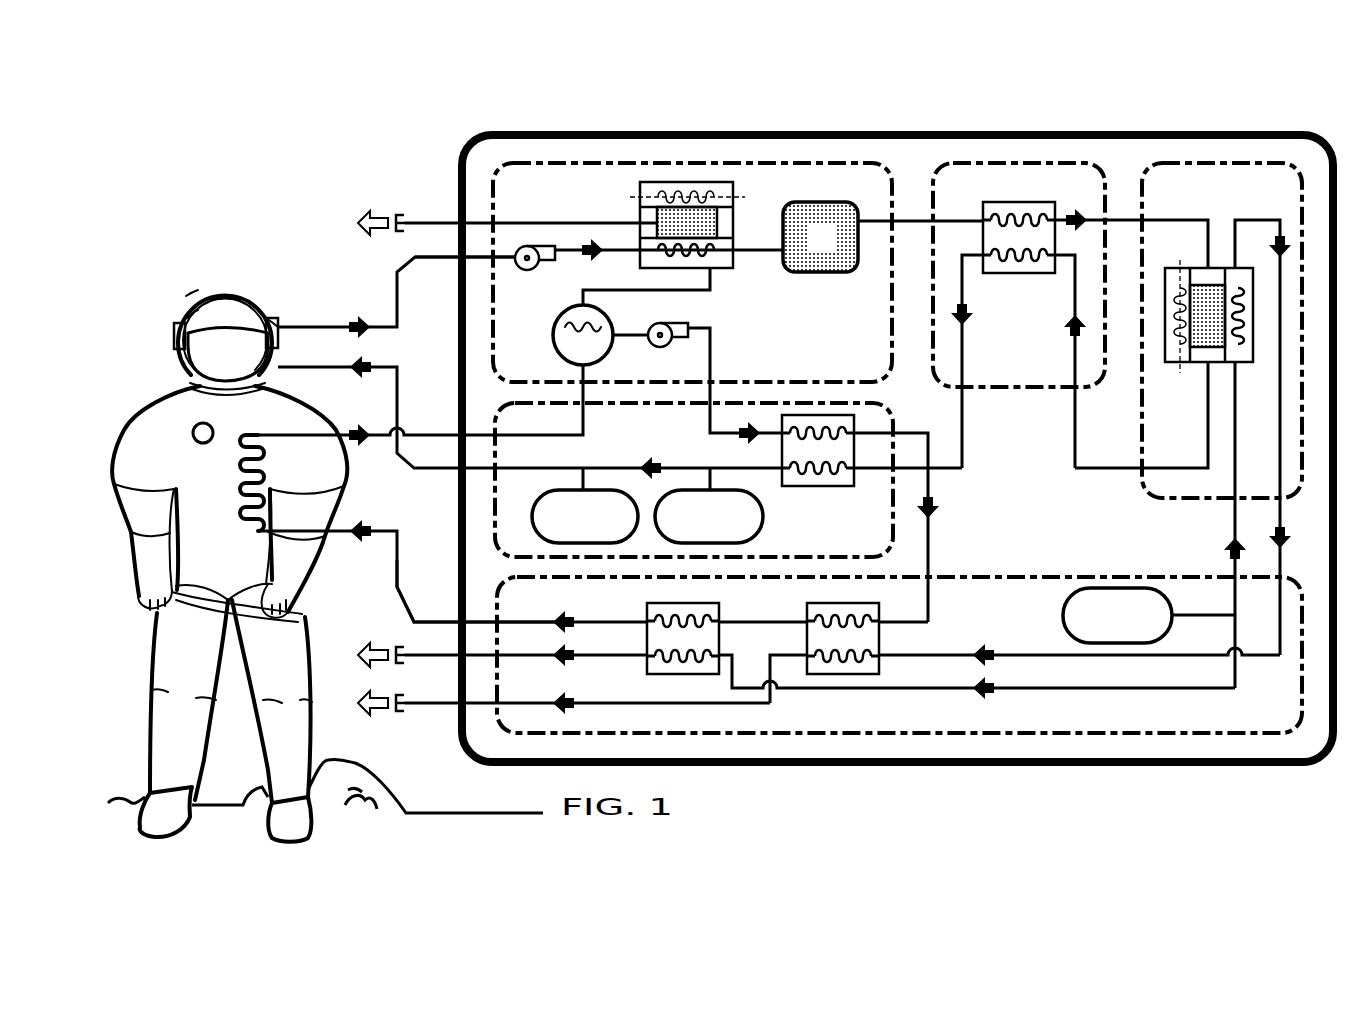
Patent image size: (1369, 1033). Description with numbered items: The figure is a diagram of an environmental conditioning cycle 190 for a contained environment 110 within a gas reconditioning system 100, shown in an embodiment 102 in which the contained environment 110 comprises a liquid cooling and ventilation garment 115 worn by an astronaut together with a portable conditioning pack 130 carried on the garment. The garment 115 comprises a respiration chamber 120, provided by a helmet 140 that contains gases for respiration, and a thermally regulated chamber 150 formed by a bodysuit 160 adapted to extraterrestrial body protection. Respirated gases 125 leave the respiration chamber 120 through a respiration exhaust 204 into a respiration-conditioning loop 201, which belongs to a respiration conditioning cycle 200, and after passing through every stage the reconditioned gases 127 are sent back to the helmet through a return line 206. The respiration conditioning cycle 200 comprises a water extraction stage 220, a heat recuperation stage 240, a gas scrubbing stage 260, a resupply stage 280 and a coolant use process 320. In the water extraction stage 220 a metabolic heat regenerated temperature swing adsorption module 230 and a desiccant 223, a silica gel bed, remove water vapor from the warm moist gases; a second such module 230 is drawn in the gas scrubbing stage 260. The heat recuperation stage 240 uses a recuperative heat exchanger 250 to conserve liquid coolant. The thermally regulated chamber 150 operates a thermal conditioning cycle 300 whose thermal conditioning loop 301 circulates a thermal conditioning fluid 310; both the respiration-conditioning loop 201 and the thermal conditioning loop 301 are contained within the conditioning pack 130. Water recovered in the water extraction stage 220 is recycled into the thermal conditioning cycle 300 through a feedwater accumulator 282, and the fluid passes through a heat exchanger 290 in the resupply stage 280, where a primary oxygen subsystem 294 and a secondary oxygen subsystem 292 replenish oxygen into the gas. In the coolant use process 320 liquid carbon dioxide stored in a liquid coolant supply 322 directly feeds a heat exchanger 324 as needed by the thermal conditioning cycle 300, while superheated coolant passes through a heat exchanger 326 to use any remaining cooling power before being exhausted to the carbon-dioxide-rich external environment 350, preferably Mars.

The gas reconditioning system 100 is at (182, 186).
The embodiment 102 is at (285, 155).
The contained environment 110 is at (207, 362).
The liquid cooling and ventilation garment 115 is at (187, 283).
The respiration chamber 120 is at (227, 312).
The respirated gases 125 is at (396, 264).
The reconditioned gases 127 is at (410, 466).
The conditioning pack 130 is at (452, 135).
The helmet 140 is at (190, 313).
The thermally regulated chamber 150 is at (233, 491).
The bodysuit 160 is at (183, 442).
The environmental conditioning cycle 190 is at (446, 163).
The respiration conditioning cycle 200 is at (446, 190).
The respiration-conditioning loop 201 is at (308, 314).
The respiration exhaust 204 is at (398, 297).
The return line 206 is at (398, 376).
The water extraction stage 220 is at (772, 163).
The desiccant 223 is at (804, 273).
The metabolic heat regenerated temperature swing adsorption module 230 is at (725, 270).
The heat recuperation stage 240 is at (1070, 163).
The recuperative heat exchanger 250 is at (1020, 202).
The gas scrubbing stage 260 is at (1178, 163).
The resupply stage 280 is at (495, 505).
The feedwater accumulator 282 is at (567, 308).
The heat exchanger 290 is at (848, 487).
The secondary oxygen subsystem 292 is at (764, 515).
The primary oxygen subsystem 294 is at (556, 493).
The thermal conditioning cycle 300 is at (1165, 777).
The thermal conditioning loop 301 is at (384, 597).
The thermal conditioning fluid 310 is at (553, 335).
The coolant use process 320 is at (1072, 733).
The liquid coolant supply 322 is at (1063, 608).
The heat exchanger 324 is at (647, 612).
The heat exchanger 326 is at (807, 612).
The external environment 350 is at (316, 236).